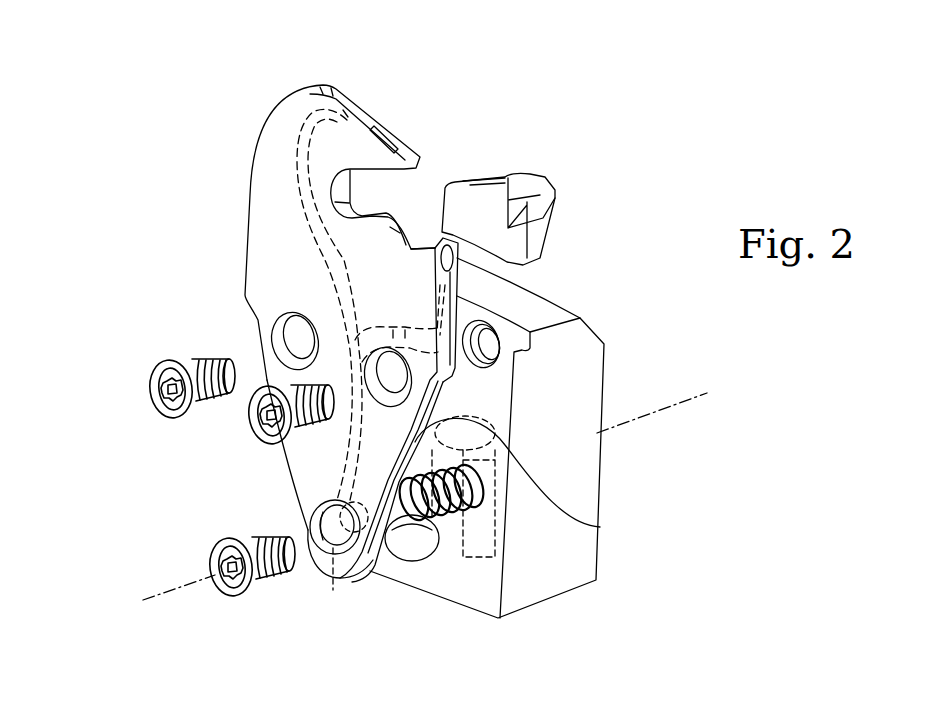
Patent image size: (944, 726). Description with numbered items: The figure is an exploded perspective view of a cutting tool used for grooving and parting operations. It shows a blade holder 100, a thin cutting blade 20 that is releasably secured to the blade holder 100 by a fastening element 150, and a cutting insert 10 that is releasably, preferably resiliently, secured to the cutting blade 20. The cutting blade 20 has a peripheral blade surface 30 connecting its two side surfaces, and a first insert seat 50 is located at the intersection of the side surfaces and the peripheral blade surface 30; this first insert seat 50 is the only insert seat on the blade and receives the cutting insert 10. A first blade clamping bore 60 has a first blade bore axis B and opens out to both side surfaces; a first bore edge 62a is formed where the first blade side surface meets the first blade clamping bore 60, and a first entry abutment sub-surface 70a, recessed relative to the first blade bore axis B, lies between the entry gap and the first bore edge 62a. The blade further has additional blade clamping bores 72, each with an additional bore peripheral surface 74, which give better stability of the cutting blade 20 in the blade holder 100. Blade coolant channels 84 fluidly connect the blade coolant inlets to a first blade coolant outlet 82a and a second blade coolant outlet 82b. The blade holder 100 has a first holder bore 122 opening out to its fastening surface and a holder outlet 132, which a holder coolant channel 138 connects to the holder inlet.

The cutting insert 10 is at (521, 155).
The cutting blade 20 is at (255, 90).
The peripheral blade surface 30 is at (372, 583).
The first insert seat 50 is at (443, 157).
The first blade clamping bore 60 is at (314, 560).
The first bore edge 62a is at (336, 562).
The first entry abutment sub-surface 70a is at (320, 522).
The additional blade clamping bore 72 is at (262, 357).
The additional bore peripheral surface 74 is at (268, 338).
The first blade coolant outlet 82a is at (398, 123).
The second blade coolant outlet 82b is at (487, 269).
The blade coolant channels 84 is at (274, 222).
The blade holder 100 is at (575, 610).
The first holder bore 122 is at (417, 527).
The holder outlet 132 is at (600, 527).
The holder coolant channel 138 is at (470, 545).
The fastening element 150 is at (138, 402).
The first blade bore axis B is at (660, 416).